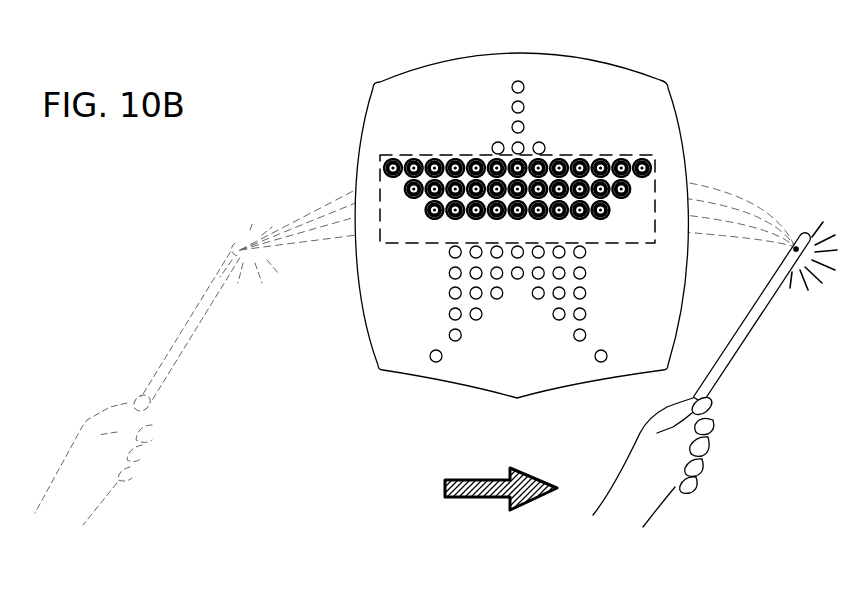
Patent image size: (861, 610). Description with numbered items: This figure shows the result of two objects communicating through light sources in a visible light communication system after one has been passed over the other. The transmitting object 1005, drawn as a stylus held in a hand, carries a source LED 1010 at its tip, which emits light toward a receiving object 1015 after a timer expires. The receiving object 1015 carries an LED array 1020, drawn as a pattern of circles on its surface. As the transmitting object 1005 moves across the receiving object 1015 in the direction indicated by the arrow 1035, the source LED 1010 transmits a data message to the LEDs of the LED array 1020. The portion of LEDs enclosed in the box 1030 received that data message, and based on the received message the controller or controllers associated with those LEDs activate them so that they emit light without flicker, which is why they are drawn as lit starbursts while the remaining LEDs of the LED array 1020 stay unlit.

The transmitting object 1005 is at (728, 347).
The source LED 1010 is at (794, 245).
The receiving object 1015 is at (680, 117).
The LED array 1020 is at (535, 130).
The box 1030 is at (580, 154).
The arrow 1035 is at (480, 480).